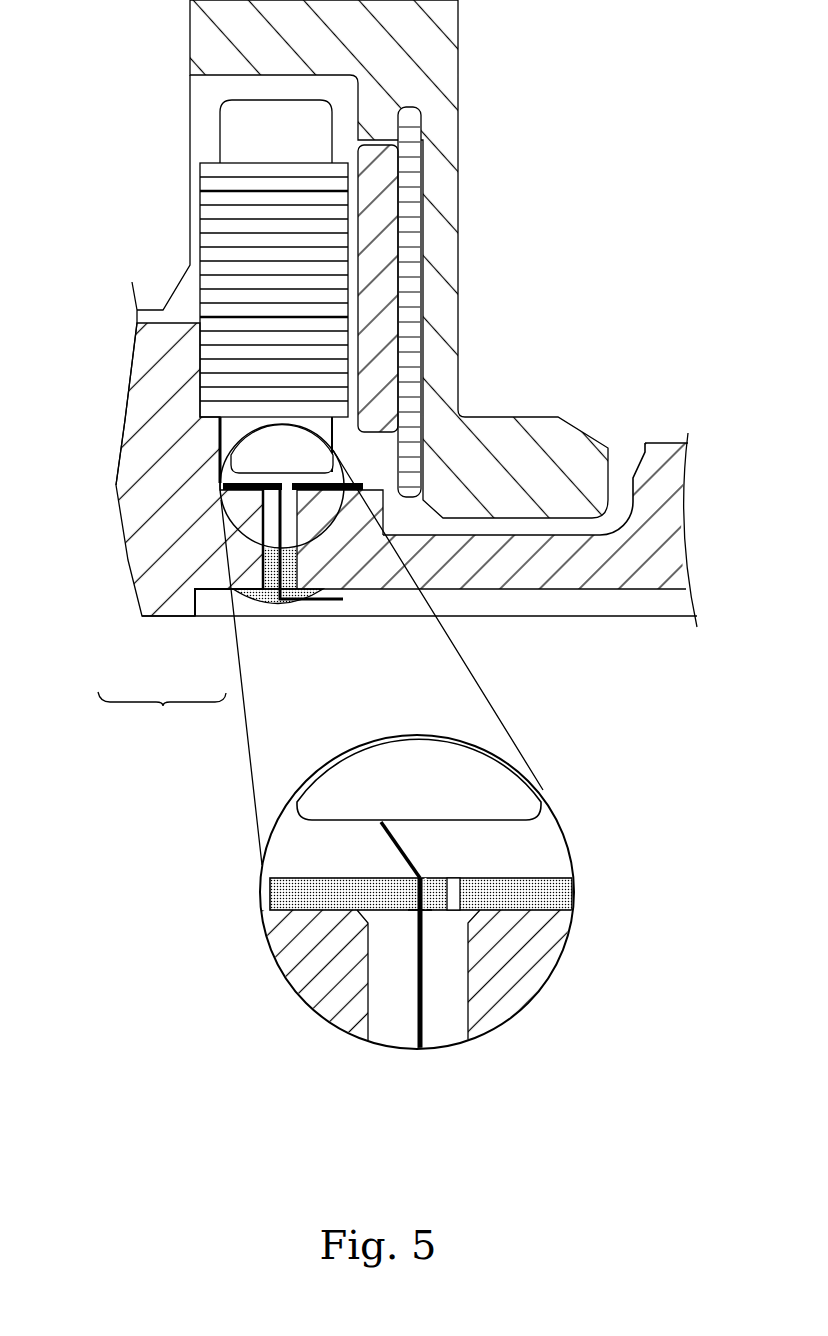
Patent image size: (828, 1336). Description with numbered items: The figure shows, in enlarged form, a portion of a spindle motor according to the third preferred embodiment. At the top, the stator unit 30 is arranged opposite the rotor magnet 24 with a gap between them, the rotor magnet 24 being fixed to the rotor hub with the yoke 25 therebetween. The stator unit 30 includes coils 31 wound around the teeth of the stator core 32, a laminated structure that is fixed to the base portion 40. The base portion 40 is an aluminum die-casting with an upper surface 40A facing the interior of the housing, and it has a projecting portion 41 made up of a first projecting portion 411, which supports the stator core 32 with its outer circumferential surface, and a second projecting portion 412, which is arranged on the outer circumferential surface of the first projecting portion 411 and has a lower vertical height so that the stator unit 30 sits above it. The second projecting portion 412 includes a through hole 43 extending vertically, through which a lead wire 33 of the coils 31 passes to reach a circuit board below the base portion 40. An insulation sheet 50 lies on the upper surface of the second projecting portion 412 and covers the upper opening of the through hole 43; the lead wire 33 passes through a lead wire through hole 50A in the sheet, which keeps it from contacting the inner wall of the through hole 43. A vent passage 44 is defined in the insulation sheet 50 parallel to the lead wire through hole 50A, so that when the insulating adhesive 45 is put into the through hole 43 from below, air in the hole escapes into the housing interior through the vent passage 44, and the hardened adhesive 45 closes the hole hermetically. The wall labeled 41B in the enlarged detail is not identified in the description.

The stator unit 30 is at (225, 88).
The coils 31 is at (210, 160).
The stator core 32 is at (233, 126).
The yoke 25 is at (422, 132).
The rotor magnet 24 is at (418, 228).
The base portion 40 is at (605, 578).
The upper surface 40A is at (447, 533).
The projecting portion 41 is at (180, 512).
The first projecting portion 411 is at (178, 510).
The second projecting portion 412 is at (248, 510).
The wall portion 41B is at (537, 986).
The through hole 43 is at (266, 499).
The vent passage 44 is at (460, 885).
The adhesive 45 is at (268, 607).
The insulation sheet 50 is at (227, 487).
The lead wire through hole 50A is at (411, 913).
The lead wire 33 is at (337, 602).